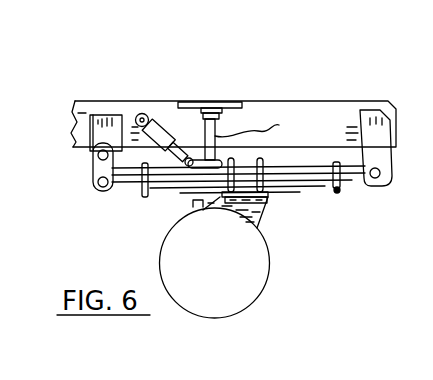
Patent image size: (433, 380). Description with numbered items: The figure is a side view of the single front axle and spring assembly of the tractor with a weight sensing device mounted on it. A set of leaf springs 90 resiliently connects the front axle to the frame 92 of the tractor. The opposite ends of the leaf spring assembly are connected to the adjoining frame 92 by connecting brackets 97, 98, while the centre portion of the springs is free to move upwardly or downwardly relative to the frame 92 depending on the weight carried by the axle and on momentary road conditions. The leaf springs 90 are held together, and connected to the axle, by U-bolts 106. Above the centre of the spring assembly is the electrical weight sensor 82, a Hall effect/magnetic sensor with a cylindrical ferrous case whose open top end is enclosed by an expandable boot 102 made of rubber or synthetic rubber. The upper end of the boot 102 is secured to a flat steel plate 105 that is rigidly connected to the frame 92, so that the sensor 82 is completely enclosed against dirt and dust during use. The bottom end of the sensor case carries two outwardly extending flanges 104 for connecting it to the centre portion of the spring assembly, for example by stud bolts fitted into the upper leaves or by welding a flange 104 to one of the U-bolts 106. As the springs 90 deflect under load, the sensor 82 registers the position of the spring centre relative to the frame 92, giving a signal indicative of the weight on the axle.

The weight sensor 82 is at (262, 123).
The leaf springs 90 is at (137, 168).
The frame 92 is at (314, 101).
The connecting bracket 97 is at (103, 121).
The connecting bracket 98 is at (383, 121).
The expandable boot 102 is at (248, 102).
The flanges 104 is at (208, 166).
The flat steel plate 105 is at (207, 102).
The U-bolts 106 is at (263, 162).